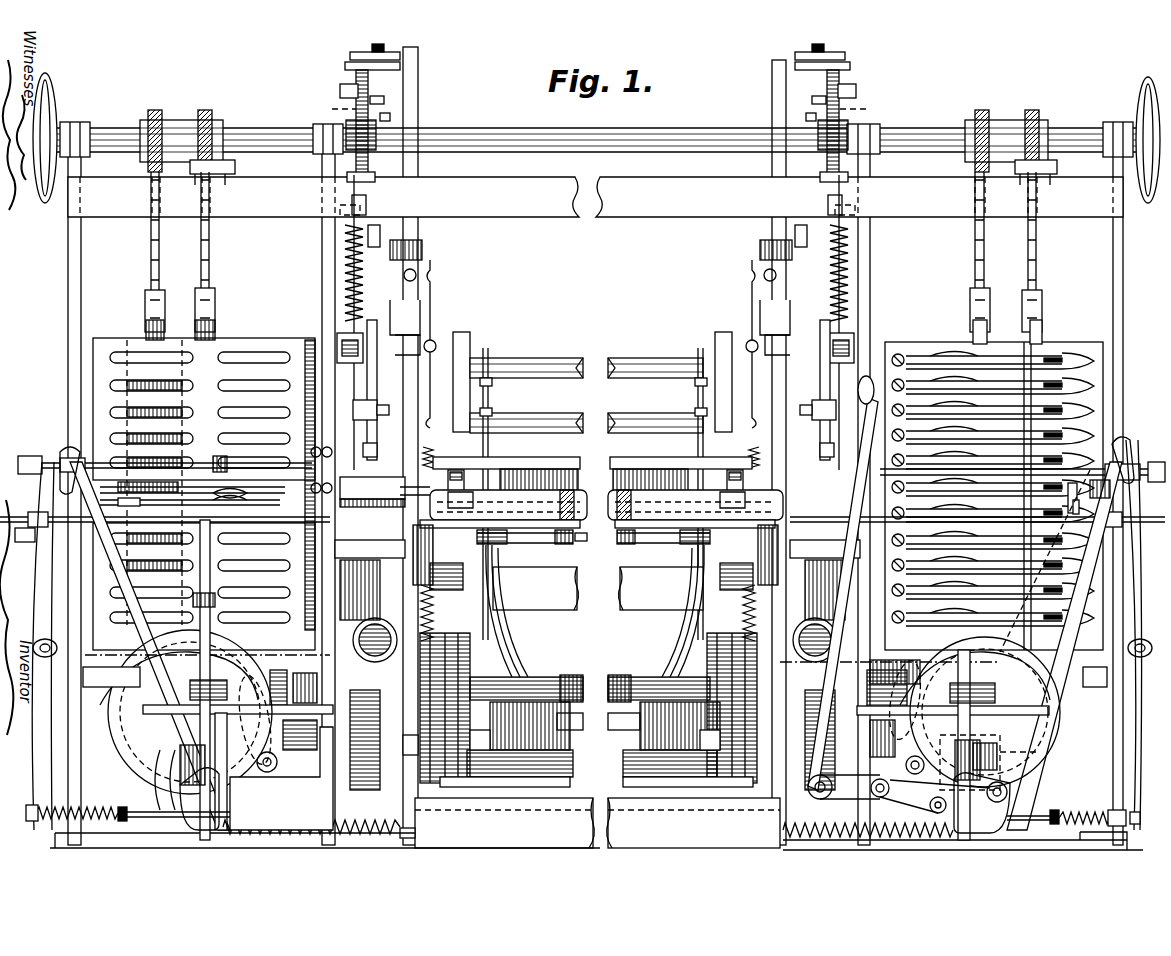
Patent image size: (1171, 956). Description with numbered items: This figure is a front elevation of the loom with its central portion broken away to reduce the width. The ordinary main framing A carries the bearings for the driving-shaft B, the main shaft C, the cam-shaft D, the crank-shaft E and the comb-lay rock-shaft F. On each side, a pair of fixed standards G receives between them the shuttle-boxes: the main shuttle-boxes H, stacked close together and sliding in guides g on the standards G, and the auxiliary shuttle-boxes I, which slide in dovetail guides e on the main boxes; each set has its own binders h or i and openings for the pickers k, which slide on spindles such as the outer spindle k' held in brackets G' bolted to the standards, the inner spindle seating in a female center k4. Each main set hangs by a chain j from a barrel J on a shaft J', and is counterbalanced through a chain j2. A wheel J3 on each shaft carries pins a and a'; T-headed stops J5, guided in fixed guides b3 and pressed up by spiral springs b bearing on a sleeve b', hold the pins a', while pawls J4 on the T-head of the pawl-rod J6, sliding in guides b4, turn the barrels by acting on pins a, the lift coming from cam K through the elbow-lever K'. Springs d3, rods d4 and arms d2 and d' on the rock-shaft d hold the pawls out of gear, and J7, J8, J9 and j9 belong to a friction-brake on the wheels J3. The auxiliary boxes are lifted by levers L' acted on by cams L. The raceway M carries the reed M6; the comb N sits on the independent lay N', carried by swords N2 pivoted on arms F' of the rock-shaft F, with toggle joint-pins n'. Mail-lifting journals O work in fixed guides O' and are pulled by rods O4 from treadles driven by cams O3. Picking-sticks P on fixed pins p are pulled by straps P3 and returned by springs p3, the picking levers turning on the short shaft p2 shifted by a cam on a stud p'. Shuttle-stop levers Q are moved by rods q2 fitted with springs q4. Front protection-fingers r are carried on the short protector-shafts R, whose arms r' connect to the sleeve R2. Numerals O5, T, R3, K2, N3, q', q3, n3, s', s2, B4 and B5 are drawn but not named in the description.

The fixed standard G is at (589, 497).
The bracket G' is at (594, 497).
The barrel shaft J' is at (597, 128).
The barrel J is at (598, 140).
The friction-brake part J9 is at (591, 46).
The friction-brake part j9 is at (597, 51).
The friction-brake part J7 is at (596, 122).
The pin a' is at (614, 96).
The pin a is at (598, 95).
The wheel or disk J3 is at (596, 105).
The friction-brake part J8 is at (598, 122).
The pawl J4 is at (597, 151).
The T-headed stop J5 is at (597, 206).
The fixed guide b3 is at (857, 212).
The counterbalance chain j2 is at (590, 252).
The chain j is at (592, 252).
The spiral spring b is at (596, 322).
The sleeve b' is at (595, 354).
The pawl-rod J6 is at (598, 390).
The rock-shaft arm d' is at (595, 317).
The fixed guide b4 is at (598, 449).
The rock-shaft d is at (591, 252).
The rock-shaft arm d2 is at (591, 271).
The rod d4 is at (591, 321).
The spiral spring d3 is at (599, 410).
The main shuttle-box H is at (598, 494).
The binder h is at (993, 488).
The guide g is at (594, 484).
The dovetail guide e is at (318, 485).
The outer picker guide-spindle k' is at (591, 463).
The picker k is at (213, 457).
The front protector-shaft R is at (582, 516).
The fixed female center k4 is at (15, 537).
The auxiliary shuttle-box I is at (192, 495).
The binder i is at (155, 496).
The shuttle-raceway M is at (372, 492).
The fixed guide O' is at (592, 370).
The journal O is at (586, 395).
The rod O4 is at (493, 494).
The roller shaft O5 is at (694, 494).
The reed M6 is at (592, 474).
The block T is at (595, 481).
The comb N is at (591, 503).
The independent lay N' is at (597, 509).
The sleeve or hollow shaft R2 is at (593, 544).
The coupling R3 is at (593, 537).
The toggle joint-pin n' is at (588, 613).
The cam K is at (595, 700).
The elbow-lever K' is at (588, 675).
The gear K2 is at (591, 664).
The treadle cam O3 is at (595, 611).
The main shaft C is at (590, 688).
The cam-shaft D is at (605, 726).
The comb-lay rock-shaft F is at (592, 762).
The rock-shaft arm F' is at (590, 786).
The sword N2 is at (600, 731).
The crank-shaft E is at (411, 745).
The main framing A is at (762, 814).
The lug N3 is at (403, 825).
The picking-stick P is at (596, 646).
The shuttle-stop lever Q is at (591, 633).
The pivot q' is at (596, 642).
The strap P3 is at (600, 710).
The spiral spring p3 is at (595, 712).
The fixed pin p is at (592, 680).
The fixed stud p' is at (595, 745).
The short shaft p2 is at (593, 733).
The rod q2 is at (588, 806).
The collar q3 is at (588, 806).
The spiral spring q4 is at (583, 807).
The spring n3 is at (588, 834).
The lever s' is at (843, 583).
The gear s2 is at (895, 652).
The cam L is at (939, 725).
The lever L' is at (1025, 747).
The driving-shaft B is at (847, 789).
The pivot B4 is at (965, 795).
The link B5 is at (935, 796).
The protector-shaft arm r' is at (1078, 488).
The front protection-finger r is at (1080, 503).